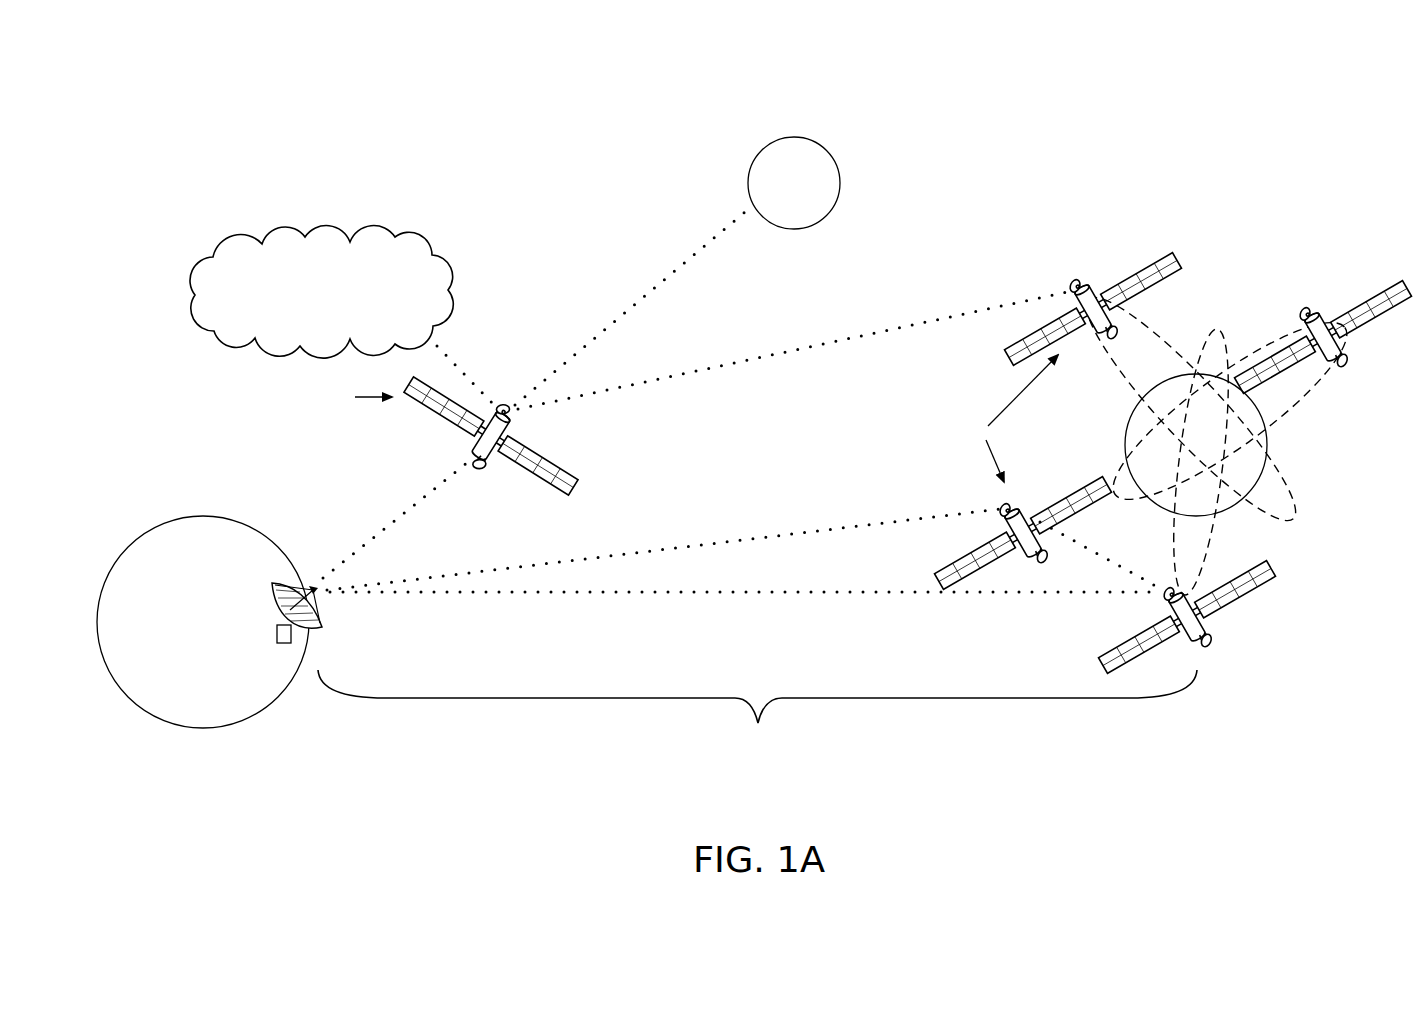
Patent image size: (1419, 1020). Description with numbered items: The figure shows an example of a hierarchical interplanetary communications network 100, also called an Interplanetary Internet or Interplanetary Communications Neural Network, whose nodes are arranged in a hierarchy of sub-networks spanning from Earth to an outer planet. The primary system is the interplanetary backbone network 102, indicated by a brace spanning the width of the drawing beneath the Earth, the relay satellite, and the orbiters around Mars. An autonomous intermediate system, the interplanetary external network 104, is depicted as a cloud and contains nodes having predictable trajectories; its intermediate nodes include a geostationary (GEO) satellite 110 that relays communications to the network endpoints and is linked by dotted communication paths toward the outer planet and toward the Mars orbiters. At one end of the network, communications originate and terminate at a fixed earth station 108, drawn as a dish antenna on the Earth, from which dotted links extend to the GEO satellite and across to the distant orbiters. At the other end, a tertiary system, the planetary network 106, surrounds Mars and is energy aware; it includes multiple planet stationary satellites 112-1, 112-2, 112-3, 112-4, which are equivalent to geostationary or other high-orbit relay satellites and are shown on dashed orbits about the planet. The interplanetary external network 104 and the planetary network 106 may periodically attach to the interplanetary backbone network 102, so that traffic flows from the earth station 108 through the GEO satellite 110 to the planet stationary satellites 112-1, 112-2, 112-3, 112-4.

The hierarchical interplanetary communications network 100 is at (1012, 796).
The interplanetary backbone network 102 is at (777, 677).
The interplanetary external network 104 is at (537, 200).
The planetary network 106 is at (1095, 413).
The fixed earth station 108 is at (318, 636).
The geostationary (GEO) satellite 110 is at (512, 404).
The planet stationary satellite 112-1 is at (1082, 284).
The planet stationary satellite 112-2 is at (1010, 538).
The planet stationary satellite 112-3 is at (1200, 622).
The planet stationary satellite 112-4 is at (1313, 312).